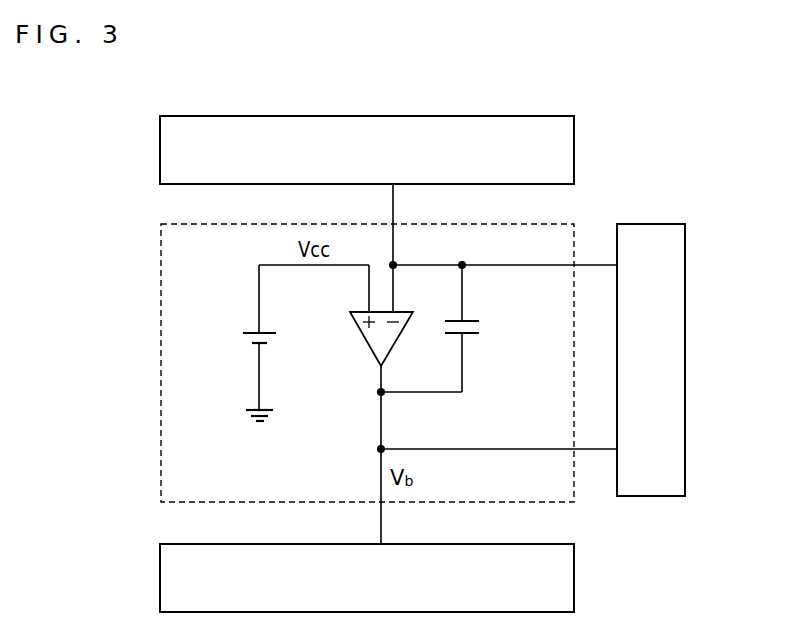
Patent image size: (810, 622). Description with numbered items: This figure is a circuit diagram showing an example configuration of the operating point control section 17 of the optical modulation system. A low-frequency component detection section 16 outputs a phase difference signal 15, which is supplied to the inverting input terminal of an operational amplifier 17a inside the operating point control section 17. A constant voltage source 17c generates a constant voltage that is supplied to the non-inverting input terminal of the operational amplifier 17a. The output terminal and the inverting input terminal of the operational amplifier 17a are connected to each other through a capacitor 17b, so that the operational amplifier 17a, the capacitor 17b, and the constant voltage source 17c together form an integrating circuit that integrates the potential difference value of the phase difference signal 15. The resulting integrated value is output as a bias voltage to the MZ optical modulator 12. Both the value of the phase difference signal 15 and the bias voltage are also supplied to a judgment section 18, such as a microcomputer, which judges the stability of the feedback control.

The MZ optical modulator 12 is at (576, 582).
The phase difference signal 15 is at (414, 248).
The low-frequency component detection section 16 is at (576, 153).
The operating point control section 17 is at (522, 224).
The operational amplifier 17a is at (365, 349).
The capacitor 17b is at (480, 320).
The constant voltage source 17c is at (258, 375).
The judgment section 18 is at (686, 363).